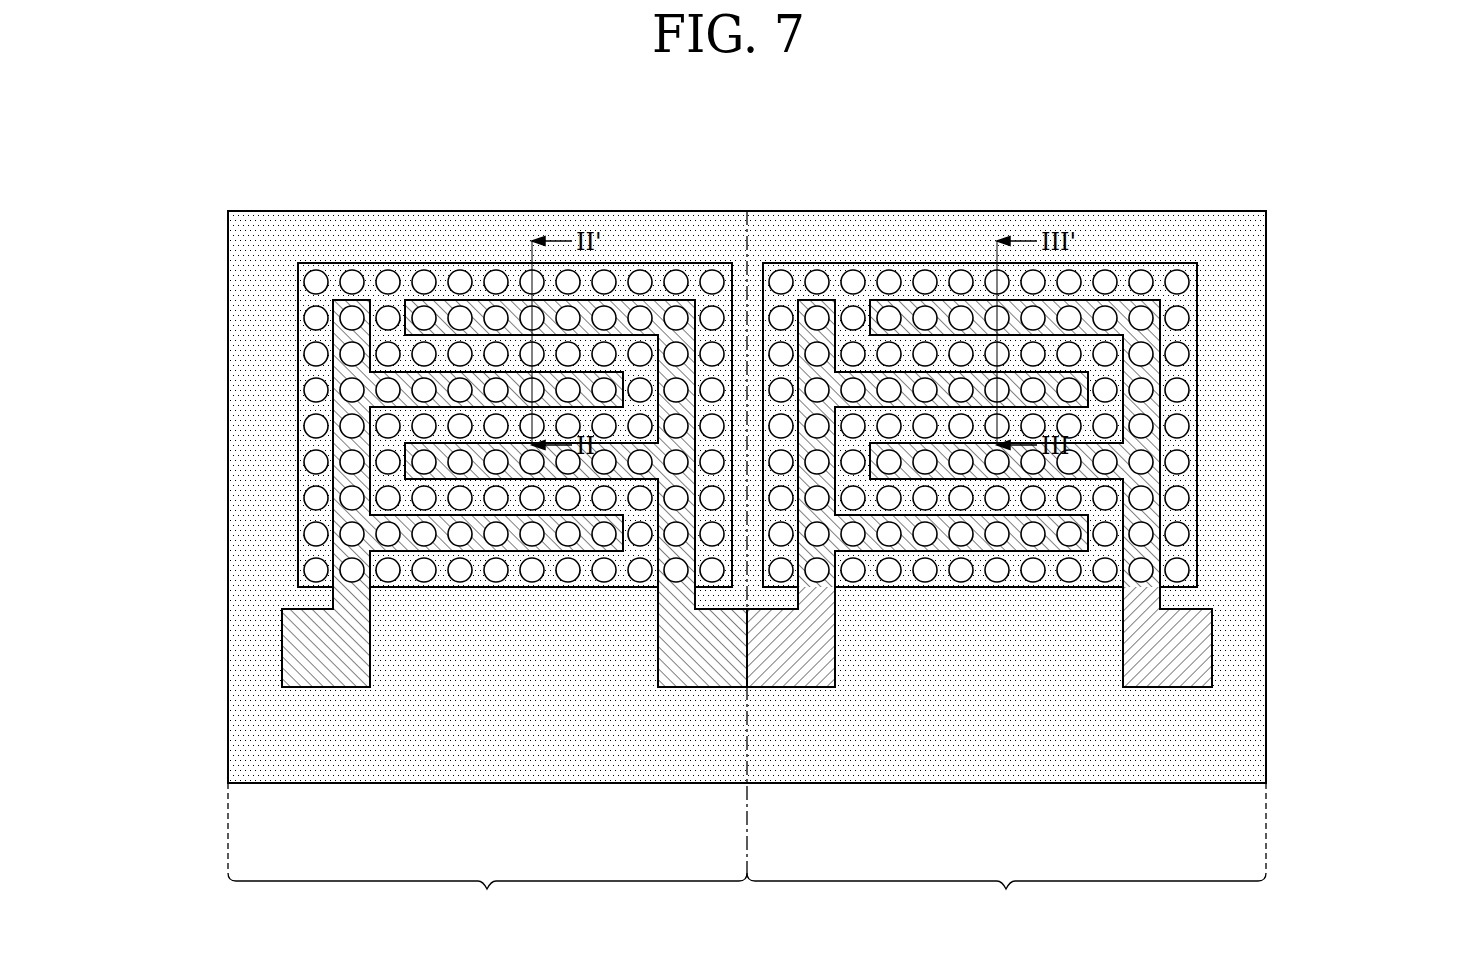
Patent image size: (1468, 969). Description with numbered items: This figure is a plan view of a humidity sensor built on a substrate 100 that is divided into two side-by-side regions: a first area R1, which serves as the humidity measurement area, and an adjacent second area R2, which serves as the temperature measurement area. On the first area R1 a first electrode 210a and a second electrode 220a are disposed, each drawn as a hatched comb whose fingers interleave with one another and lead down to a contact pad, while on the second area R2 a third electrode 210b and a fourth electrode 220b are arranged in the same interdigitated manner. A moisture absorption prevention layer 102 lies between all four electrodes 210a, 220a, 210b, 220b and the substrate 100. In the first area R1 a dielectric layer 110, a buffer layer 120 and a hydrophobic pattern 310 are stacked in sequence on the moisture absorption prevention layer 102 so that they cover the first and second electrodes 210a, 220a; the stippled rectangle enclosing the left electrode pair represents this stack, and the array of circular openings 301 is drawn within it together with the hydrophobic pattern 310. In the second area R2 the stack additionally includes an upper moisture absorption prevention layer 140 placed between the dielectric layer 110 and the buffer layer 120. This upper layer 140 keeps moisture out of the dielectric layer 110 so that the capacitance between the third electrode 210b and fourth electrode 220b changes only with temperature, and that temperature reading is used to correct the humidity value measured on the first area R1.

The substrate 100 is at (678, 497).
The moisture absorption prevention layer 102 is at (247, 451).
The dielectric layer 110 is at (767, 425).
The buffer layer 120 is at (298, 373).
The upper moisture absorption prevention layer 140 is at (1198, 406).
The first through holes 301 is at (313, 318).
The hydrophobic pattern 310 is at (1180, 318).
The first electrode 210a is at (297, 650).
The second electrode 220a is at (703, 670).
The third electrode 210b is at (788, 670).
The fourth electrode 220b is at (1197, 650).
The first area R1 is at (487, 896).
The second area R2 is at (1006, 896).